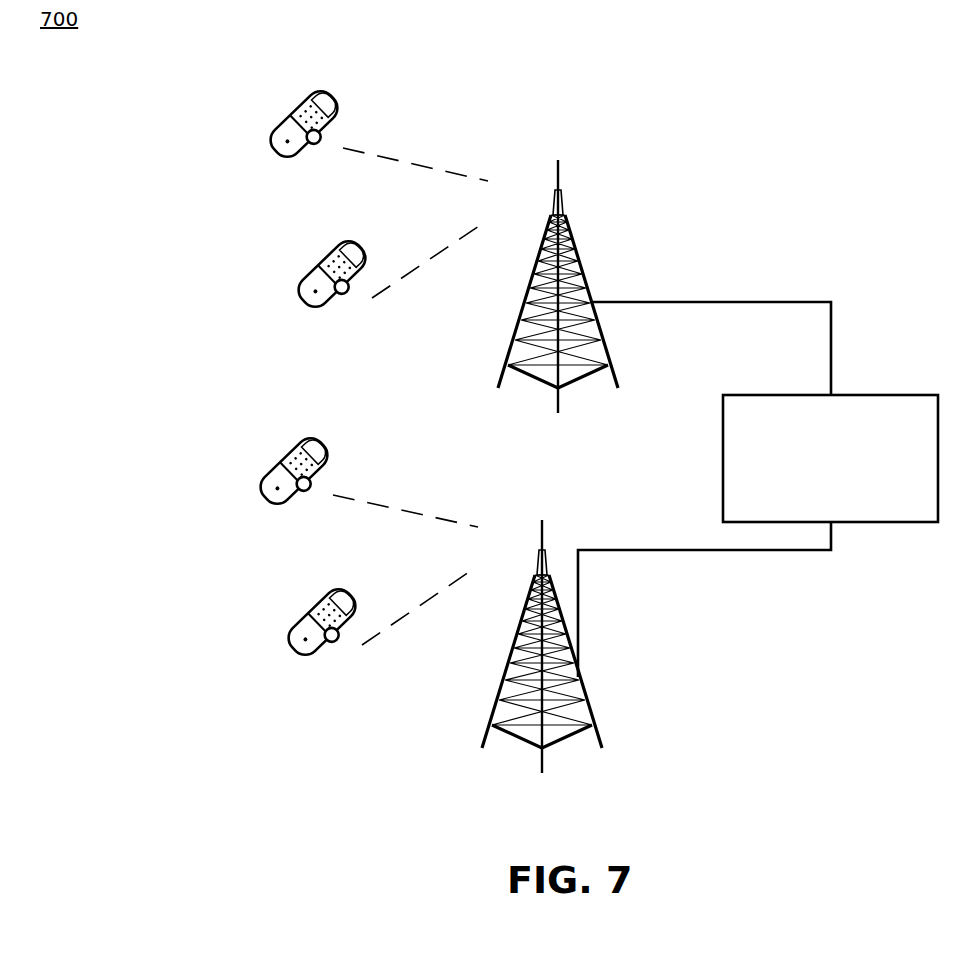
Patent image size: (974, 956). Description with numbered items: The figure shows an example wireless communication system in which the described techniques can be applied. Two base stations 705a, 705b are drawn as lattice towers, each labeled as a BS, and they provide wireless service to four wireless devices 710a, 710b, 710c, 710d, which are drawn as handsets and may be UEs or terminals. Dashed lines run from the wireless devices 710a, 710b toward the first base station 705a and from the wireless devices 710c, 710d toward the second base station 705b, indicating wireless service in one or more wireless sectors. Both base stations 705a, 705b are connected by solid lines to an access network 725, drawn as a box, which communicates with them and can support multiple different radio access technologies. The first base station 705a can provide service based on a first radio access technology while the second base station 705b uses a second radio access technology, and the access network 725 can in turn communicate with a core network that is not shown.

The first base station 705a is at (573, 246).
The second base station 705b is at (550, 547).
The wireless device 710a is at (300, 98).
The wireless device 710b is at (326, 247).
The wireless device 710c is at (288, 445).
The wireless device 710d is at (316, 597).
The access network 725 is at (739, 393).